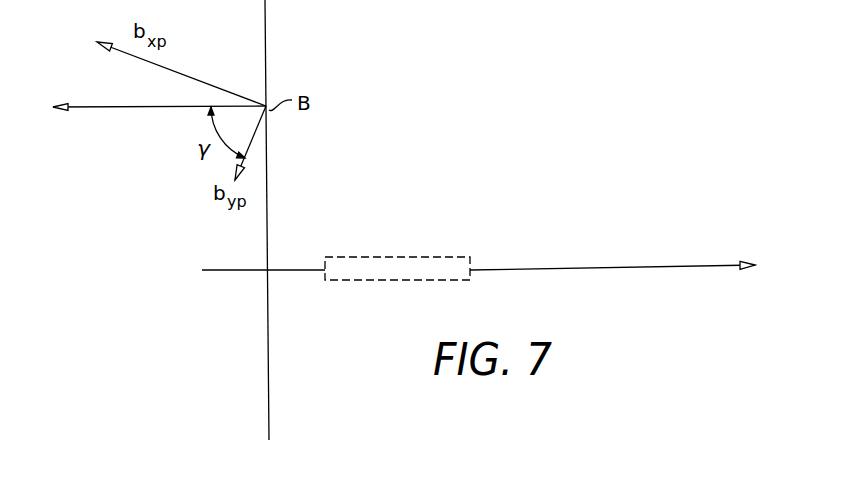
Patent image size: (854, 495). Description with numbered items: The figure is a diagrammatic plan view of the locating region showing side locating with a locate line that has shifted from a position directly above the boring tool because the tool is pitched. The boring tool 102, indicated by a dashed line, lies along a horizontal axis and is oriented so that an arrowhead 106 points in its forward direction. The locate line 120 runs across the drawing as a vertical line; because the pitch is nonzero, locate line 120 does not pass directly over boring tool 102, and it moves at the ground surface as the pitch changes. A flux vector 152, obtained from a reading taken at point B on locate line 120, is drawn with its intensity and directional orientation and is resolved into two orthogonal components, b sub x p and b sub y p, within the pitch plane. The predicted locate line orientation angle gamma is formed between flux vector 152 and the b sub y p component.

The boring tool 102 is at (408, 257).
The arrowhead 106 is at (717, 263).
The locate line 120 is at (269, 373).
The flux vector 152 is at (128, 108).